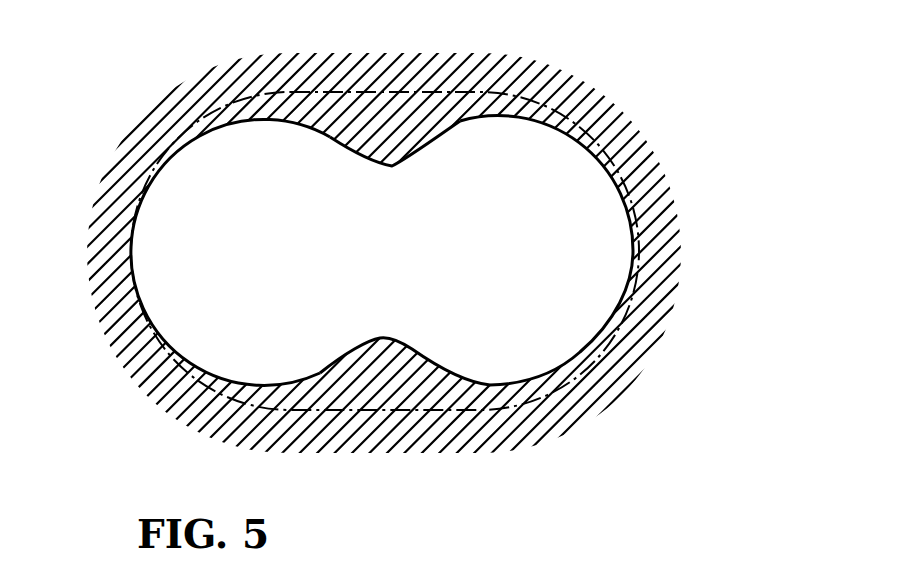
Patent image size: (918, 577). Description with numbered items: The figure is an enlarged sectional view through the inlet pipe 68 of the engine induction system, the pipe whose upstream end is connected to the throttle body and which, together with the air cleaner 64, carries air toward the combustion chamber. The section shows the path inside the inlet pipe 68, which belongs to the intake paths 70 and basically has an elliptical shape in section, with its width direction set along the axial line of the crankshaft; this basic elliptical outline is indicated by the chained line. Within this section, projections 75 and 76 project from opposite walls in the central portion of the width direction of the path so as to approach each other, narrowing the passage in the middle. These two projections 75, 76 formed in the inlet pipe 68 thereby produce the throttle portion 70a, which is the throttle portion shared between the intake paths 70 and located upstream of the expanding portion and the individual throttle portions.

The air cleaner 64 is at (634, 250).
The inlet pipe 68 is at (641, 146).
The intake paths 70 is at (157, 283).
The throttle portion 70a is at (402, 260).
The projection 75 is at (392, 167).
The projection 76 is at (385, 338).